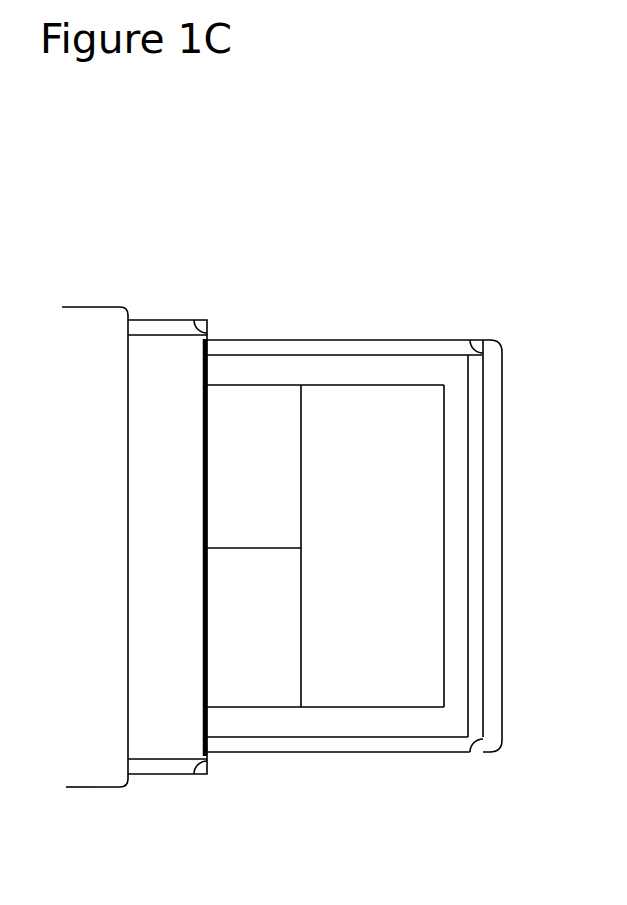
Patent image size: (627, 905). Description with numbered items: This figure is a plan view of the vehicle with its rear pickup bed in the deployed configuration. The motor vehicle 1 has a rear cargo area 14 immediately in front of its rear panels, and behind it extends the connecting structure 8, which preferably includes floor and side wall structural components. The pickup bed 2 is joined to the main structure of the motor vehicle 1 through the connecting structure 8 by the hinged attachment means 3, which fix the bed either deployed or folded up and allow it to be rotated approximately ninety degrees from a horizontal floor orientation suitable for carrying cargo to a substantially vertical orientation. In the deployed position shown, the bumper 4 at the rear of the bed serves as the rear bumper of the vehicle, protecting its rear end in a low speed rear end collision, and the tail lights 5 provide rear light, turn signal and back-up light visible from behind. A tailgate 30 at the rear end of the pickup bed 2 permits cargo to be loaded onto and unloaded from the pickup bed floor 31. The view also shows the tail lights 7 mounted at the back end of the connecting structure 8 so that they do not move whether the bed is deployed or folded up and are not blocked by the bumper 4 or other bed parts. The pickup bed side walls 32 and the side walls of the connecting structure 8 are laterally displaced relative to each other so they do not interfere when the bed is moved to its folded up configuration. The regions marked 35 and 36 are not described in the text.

The motor vehicle 1 is at (86, 305).
The pickup bed 2 is at (340, 370).
The hinged attachment means 3 is at (207, 348).
The bumper 4 is at (492, 548).
The tail lights 5 is at (476, 340).
The tail lights 7 is at (201, 316).
The connecting structure 8 is at (177, 370).
The rear cargo area 14 is at (86, 770).
The tailgate 30 is at (473, 466).
The pickup bed floor 31 is at (457, 637).
The pickup bed side walls 32 is at (326, 747).
The cell compartment 35 is at (385, 683).
The cell compartment 36 is at (238, 516).